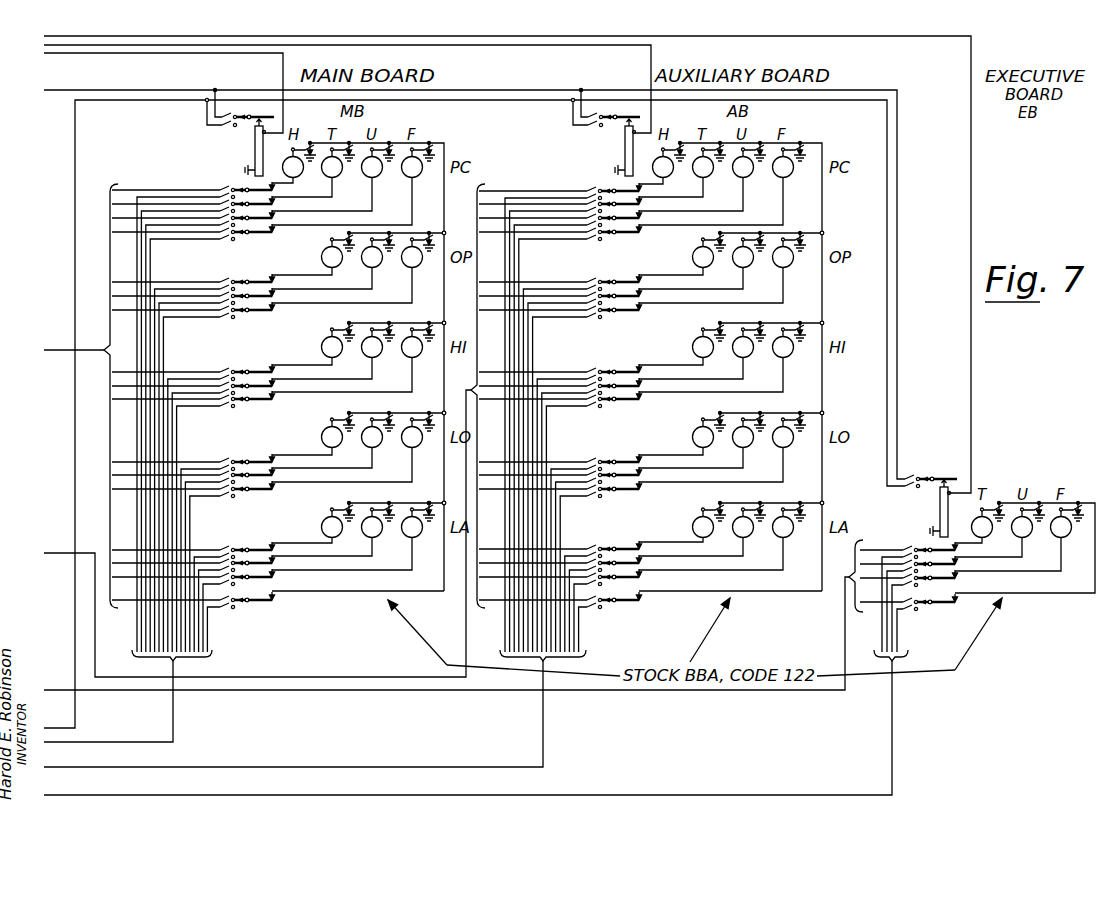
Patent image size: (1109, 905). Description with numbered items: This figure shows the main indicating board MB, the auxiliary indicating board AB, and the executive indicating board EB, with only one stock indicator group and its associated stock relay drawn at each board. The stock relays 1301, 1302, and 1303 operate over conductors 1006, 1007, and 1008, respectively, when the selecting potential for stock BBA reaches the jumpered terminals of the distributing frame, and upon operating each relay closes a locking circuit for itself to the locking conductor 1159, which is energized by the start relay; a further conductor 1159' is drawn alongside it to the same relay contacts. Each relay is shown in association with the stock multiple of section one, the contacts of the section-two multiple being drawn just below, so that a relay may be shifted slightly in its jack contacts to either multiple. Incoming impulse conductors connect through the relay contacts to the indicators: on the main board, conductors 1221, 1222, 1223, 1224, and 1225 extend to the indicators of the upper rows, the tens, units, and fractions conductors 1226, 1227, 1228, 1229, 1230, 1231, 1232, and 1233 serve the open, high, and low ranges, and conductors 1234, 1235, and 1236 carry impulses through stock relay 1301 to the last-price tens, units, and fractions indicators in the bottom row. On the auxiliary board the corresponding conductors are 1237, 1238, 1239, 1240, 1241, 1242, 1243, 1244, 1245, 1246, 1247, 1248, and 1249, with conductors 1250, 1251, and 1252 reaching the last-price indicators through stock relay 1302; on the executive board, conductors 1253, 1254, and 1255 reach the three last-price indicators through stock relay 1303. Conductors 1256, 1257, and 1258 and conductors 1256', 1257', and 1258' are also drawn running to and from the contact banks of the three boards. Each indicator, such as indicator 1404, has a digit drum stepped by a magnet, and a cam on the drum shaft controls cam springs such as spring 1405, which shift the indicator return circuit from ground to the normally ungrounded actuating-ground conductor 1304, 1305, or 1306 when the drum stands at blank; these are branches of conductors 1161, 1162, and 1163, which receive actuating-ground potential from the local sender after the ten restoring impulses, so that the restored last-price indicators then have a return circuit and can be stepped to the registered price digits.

The conductor 1006 is at (180, 54).
The conductor 1007 is at (532, 45).
The conductor 1008 is at (870, 38).
The locking conductor 1159 is at (500, 276).
The common control conductor 1159' is at (480, 413).
The actuating-ground conductor 1161 is at (278, 619).
The actuating-ground conductor 1162 is at (650, 619).
The actuating-ground conductor 1163 is at (977, 577).
The main board contact 1221 is at (202, 414).
The main board contact 1222 is at (222, 415).
The main board contact 1223 is at (242, 415).
The main board contact 1224 is at (262, 415).
The main board contact 1225 is at (222, 460).
The tens, units, and fractions conductor 1226 is at (242, 460).
The tens, units, and fractions conductor 1227 is at (262, 460).
The tens, units, and fractions conductor 1228 is at (222, 505).
The tens, units, and fractions conductor 1229 is at (242, 505).
The tens, units, and fractions conductor 1230 is at (262, 505).
The tens, units, and fractions conductor 1231 is at (222, 550).
The tens, units, and fractions conductor 1232 is at (242, 550).
The tens, units, and fractions conductor 1233 is at (262, 550).
The tens conductor 1234 is at (222, 594).
The units conductor 1235 is at (242, 595).
The fractions conductor 1236 is at (262, 595).
The auxiliary board contact 1237 is at (571, 414).
The auxiliary board contact 1238 is at (591, 415).
The auxiliary board contact 1239 is at (611, 415).
The auxiliary board contact 1240 is at (631, 415).
The tens, units, and fractions conductor 1241 is at (591, 460).
The tens, units, and fractions conductor 1242 is at (611, 460).
The tens, units, and fractions conductor 1243 is at (631, 460).
The tens, units, and fractions conductor 1244 is at (591, 505).
The tens, units, and fractions conductor 1245 is at (611, 505).
The tens, units, and fractions conductor 1246 is at (631, 505).
The tens, units, and fractions conductor 1247 is at (591, 550).
The tens, units, and fractions conductor 1248 is at (611, 550).
The tens, units, and fractions conductor 1249 is at (631, 550).
The tens conductor 1250 is at (591, 593).
The units conductor 1251 is at (611, 595).
The fractions conductor 1252 is at (631, 595).
The tens conductor 1253 is at (921, 594).
The units conductor 1254 is at (941, 595).
The fractions conductor 1255 is at (960, 595).
The main board cable 1256 is at (72, 341).
The auxiliary board cable 1257 is at (255, 533).
The executive board cable 1258 is at (444, 633).
The main board return cable 1256' is at (108, 701).
The auxiliary board return cable 1257' is at (293, 714).
The executive board return cable 1258' is at (468, 728).
The stock relay 1301 is at (255, 151).
The stock relay 1302 is at (625, 151).
The stock relay 1303 is at (940, 512).
The actuating-ground conductor 1304 is at (349, 598).
The actuating-ground conductor 1305 is at (799, 598).
The actuating-ground conductor 1306 is at (1059, 596).
The indicating lamp 1404 is at (421, 535).
The cam spring 1405 is at (429, 503).